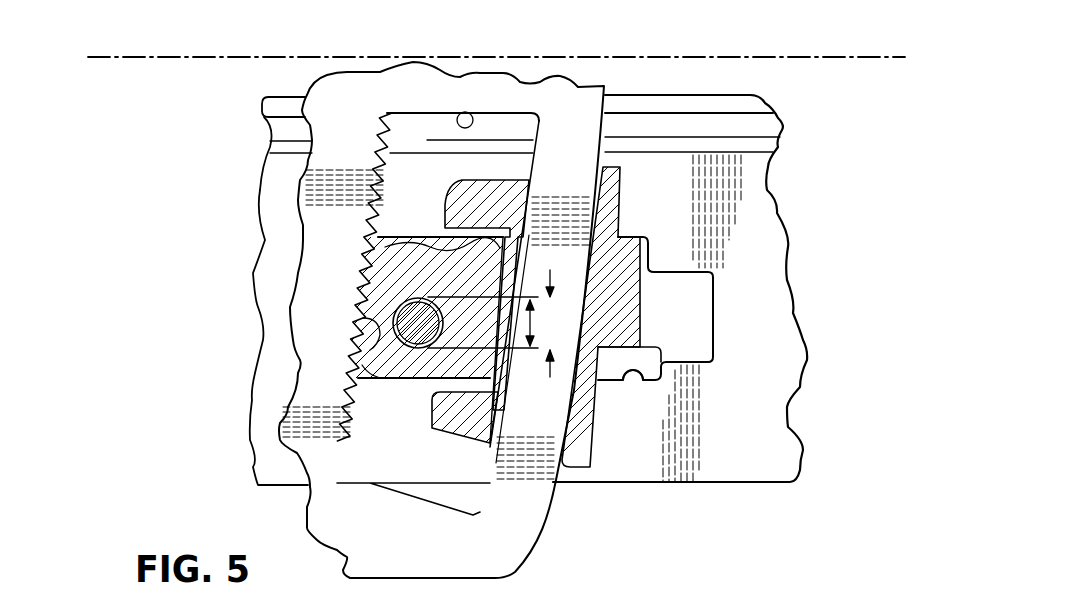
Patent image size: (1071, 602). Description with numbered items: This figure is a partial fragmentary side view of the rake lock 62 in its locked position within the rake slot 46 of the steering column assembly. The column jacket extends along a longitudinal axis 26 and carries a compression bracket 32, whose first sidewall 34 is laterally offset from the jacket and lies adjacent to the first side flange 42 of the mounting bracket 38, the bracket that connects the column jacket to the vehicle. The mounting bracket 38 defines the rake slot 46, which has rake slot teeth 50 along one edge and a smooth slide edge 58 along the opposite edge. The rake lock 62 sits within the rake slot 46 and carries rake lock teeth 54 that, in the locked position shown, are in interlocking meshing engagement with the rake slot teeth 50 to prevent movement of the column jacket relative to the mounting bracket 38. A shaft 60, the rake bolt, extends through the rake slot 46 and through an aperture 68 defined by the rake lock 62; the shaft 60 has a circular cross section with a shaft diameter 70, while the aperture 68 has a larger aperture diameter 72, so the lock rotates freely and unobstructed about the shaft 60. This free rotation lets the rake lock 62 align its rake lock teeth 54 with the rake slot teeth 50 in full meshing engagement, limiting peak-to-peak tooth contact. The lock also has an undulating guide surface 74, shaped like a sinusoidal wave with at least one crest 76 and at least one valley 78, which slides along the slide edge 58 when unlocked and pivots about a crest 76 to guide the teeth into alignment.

The longitudinal axis 26 is at (103, 57).
The compression bracket 32 is at (281, 134).
The first sidewall 34 is at (732, 228).
The mounting bracket 38 is at (590, 100).
The first side flange 42 is at (347, 122).
The rake slot 46 is at (478, 113).
The rake slot teeth 50 is at (390, 163).
The rake lock teeth 54 is at (363, 318).
The slide edge 58 is at (641, 381).
The shaft 60 is at (385, 247).
The rake lock 62 is at (447, 262).
The aperture 68 is at (407, 307).
The shaft diameter 70 is at (532, 332).
The aperture diameter 72 is at (550, 353).
The guide surface 74 is at (407, 380).
The crest 76 is at (390, 375).
The valley 78 is at (437, 393).